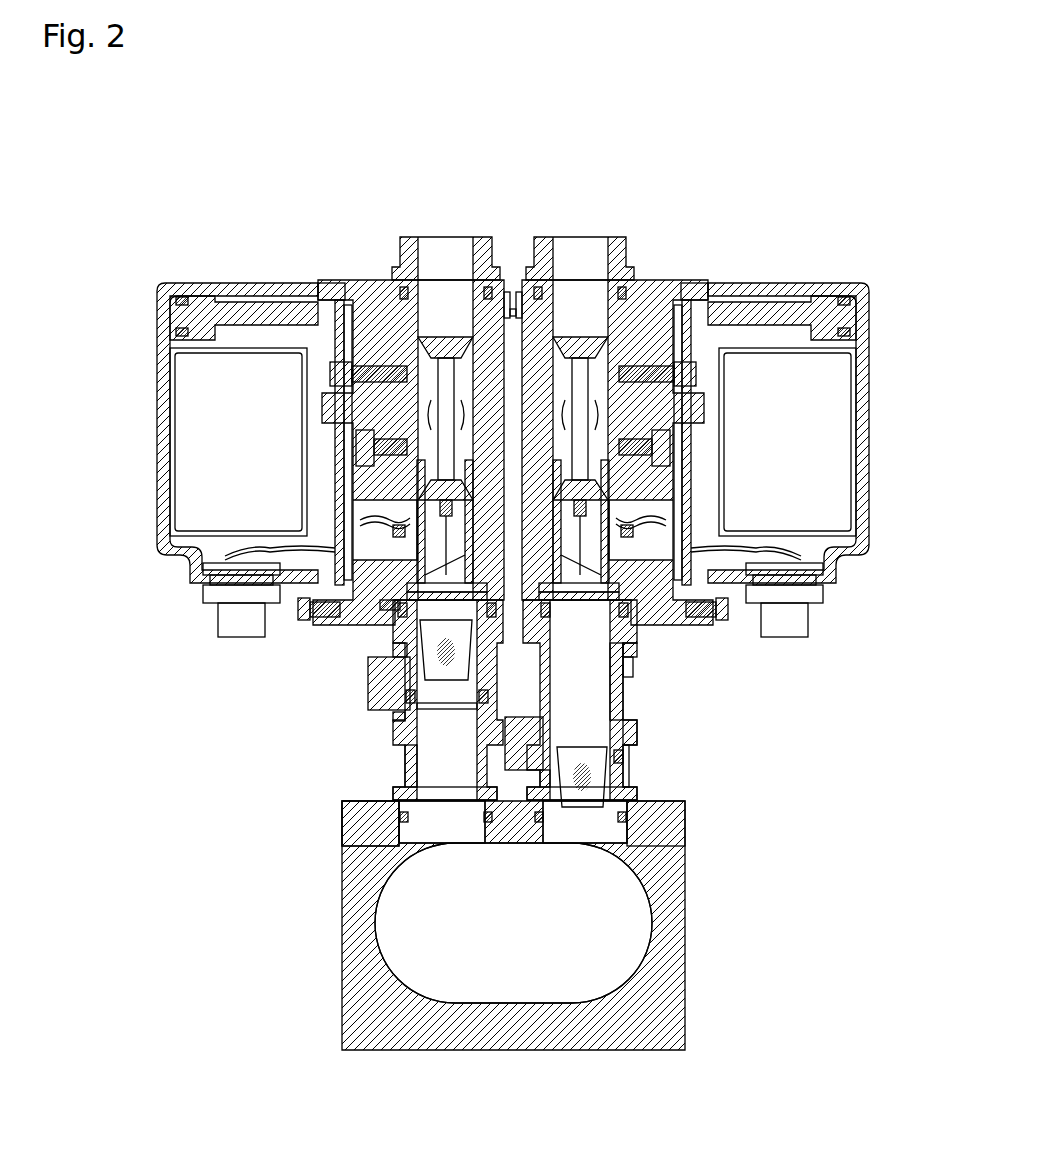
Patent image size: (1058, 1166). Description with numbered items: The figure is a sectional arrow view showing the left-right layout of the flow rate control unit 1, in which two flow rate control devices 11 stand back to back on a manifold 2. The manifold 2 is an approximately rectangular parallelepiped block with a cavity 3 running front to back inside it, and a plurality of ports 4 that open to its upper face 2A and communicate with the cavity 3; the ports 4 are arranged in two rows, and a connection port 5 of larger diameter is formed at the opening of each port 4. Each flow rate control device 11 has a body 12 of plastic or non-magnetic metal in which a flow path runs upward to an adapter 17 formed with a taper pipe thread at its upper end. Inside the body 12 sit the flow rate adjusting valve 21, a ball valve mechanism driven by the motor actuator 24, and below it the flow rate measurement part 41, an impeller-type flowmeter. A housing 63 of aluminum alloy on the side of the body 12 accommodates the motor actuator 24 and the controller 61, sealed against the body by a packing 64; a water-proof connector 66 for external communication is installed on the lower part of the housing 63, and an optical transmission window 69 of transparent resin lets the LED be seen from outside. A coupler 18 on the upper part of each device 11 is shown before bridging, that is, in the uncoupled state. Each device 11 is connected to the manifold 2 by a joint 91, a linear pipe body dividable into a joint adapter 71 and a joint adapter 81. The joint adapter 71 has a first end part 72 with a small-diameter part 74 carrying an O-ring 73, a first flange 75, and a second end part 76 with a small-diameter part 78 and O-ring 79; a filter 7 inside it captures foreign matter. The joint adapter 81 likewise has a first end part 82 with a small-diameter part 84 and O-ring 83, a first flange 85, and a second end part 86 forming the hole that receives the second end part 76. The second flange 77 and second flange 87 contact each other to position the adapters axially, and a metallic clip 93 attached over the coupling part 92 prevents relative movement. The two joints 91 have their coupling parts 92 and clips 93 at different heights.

The flow rate control unit 1 is at (808, 146).
The manifold 2 is at (690, 986).
The upper face 2A is at (354, 792).
The cavity 3 is at (448, 1000).
The port 4 is at (410, 820).
The connection port 5 is at (398, 832).
The filter 7 is at (578, 770).
The flow rate control device 11 is at (222, 262).
The body 12 is at (360, 298).
The adapter 17 is at (487, 240).
The coupler 18 is at (516, 284).
The flow rate adjusting valve 21 is at (412, 364).
The motor actuator 24 is at (190, 362).
The flow rate measurement part 41 is at (405, 490).
The controller 61 is at (338, 350).
The housing 63 is at (165, 490).
The packing 64 is at (332, 290).
The water-proof connector 66 is at (218, 620).
The optical transmission window 69 is at (175, 312).
The joint adapter 71 is at (648, 793).
The first end part 72 is at (420, 648).
The O-ring 73 is at (398, 614).
The small-diameter part 74 is at (398, 604).
The first flange 75 is at (393, 660).
The second end part 76 is at (399, 740).
The second flange 77 is at (406, 700).
The small-diameter part 78 is at (404, 712).
The O-ring 79 is at (385, 765).
The joint adapter 81 is at (402, 745).
The first end part 82 is at (650, 637).
The O-ring 83 is at (640, 630).
The small-diameter part 84 is at (640, 625).
The first flange 85 is at (645, 635).
The second end part 86 is at (640, 722).
The second flange 87 is at (642, 748).
The joint 91 is at (400, 780).
The coupling part 92 is at (404, 795).
The clip 93 is at (372, 668).